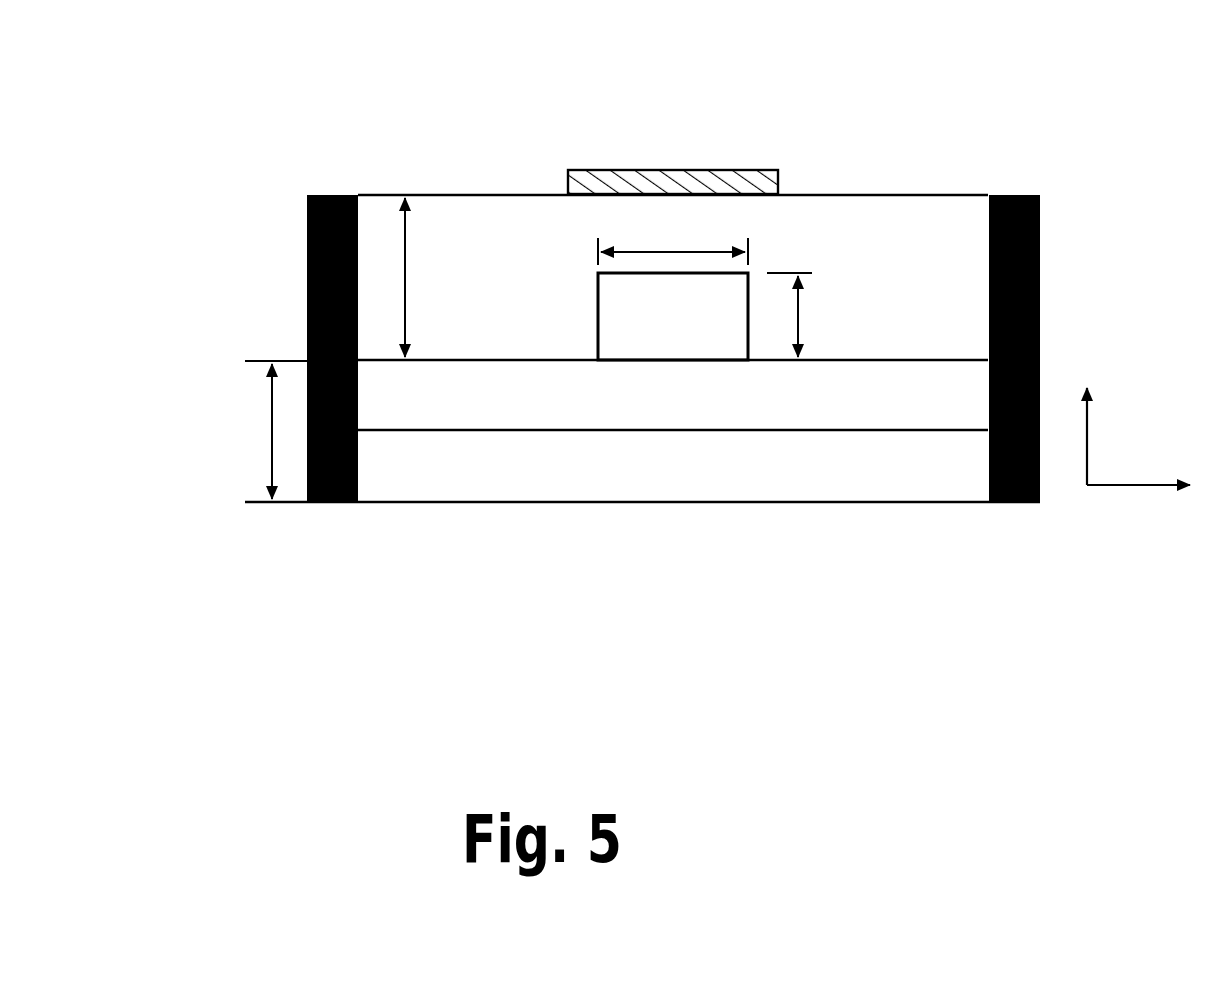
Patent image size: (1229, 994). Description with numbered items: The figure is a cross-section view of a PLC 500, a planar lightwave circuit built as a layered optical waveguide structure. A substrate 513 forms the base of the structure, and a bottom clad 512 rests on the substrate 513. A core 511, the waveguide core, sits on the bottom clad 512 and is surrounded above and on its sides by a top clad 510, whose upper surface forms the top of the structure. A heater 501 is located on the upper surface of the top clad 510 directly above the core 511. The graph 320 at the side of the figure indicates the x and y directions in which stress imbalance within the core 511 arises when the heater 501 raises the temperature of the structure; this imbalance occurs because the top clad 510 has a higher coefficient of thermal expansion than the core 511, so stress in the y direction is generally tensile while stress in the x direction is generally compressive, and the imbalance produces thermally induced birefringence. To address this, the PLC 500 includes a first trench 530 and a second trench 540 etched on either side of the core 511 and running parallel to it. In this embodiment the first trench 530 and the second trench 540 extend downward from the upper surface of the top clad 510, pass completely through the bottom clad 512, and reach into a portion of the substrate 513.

The PLC 500 is at (707, 62).
The heater 501 is at (648, 169).
The top clad 510 is at (893, 194).
The core 511 is at (595, 339).
The bottom clad 512 is at (817, 431).
The substrate 513 is at (615, 503).
The first trench 530 is at (304, 270).
The second trench 540 is at (1043, 263).
The graph 320 is at (1126, 454).